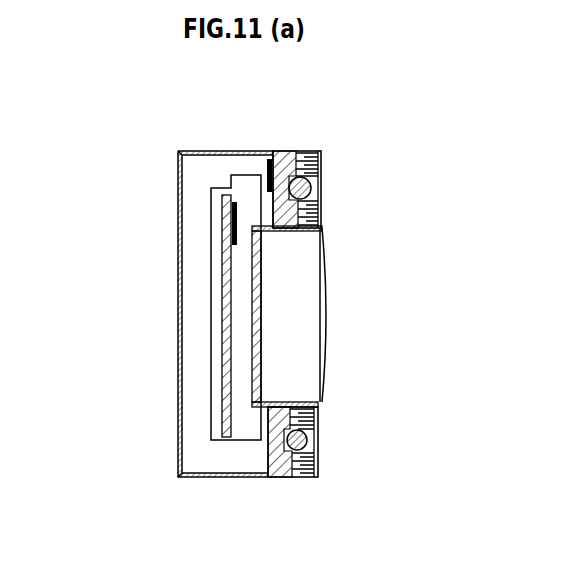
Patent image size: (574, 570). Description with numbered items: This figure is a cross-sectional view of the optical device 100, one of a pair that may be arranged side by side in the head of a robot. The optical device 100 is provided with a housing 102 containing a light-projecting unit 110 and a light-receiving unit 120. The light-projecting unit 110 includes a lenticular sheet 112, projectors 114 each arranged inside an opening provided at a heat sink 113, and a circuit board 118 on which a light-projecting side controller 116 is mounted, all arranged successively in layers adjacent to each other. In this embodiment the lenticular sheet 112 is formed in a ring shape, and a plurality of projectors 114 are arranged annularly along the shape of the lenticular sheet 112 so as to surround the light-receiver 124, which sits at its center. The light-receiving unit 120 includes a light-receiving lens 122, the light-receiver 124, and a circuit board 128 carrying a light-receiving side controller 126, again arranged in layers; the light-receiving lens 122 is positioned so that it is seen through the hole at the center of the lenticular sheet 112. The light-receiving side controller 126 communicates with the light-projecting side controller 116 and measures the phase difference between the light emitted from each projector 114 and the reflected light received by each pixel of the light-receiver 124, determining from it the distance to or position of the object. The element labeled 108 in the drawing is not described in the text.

The optical device 100 is at (160, 139).
The housing 102 is at (178, 289).
The lower frame portion 108 is at (272, 478).
The light-projecting unit 110 is at (348, 141).
The lenticular sheet 112 is at (320, 164).
The heat sink 113 is at (299, 150).
The projector 114 is at (320, 203).
The light-projecting side controller 116 is at (269, 161).
The circuit board 118 is at (288, 151).
The light-receiving unit 120 is at (205, 213).
The light-receiving lens 122 is at (330, 261).
The light-receiver 124 is at (264, 309).
The light-receiving side controller 126 is at (235, 201).
The circuit board 128 is at (222, 397).